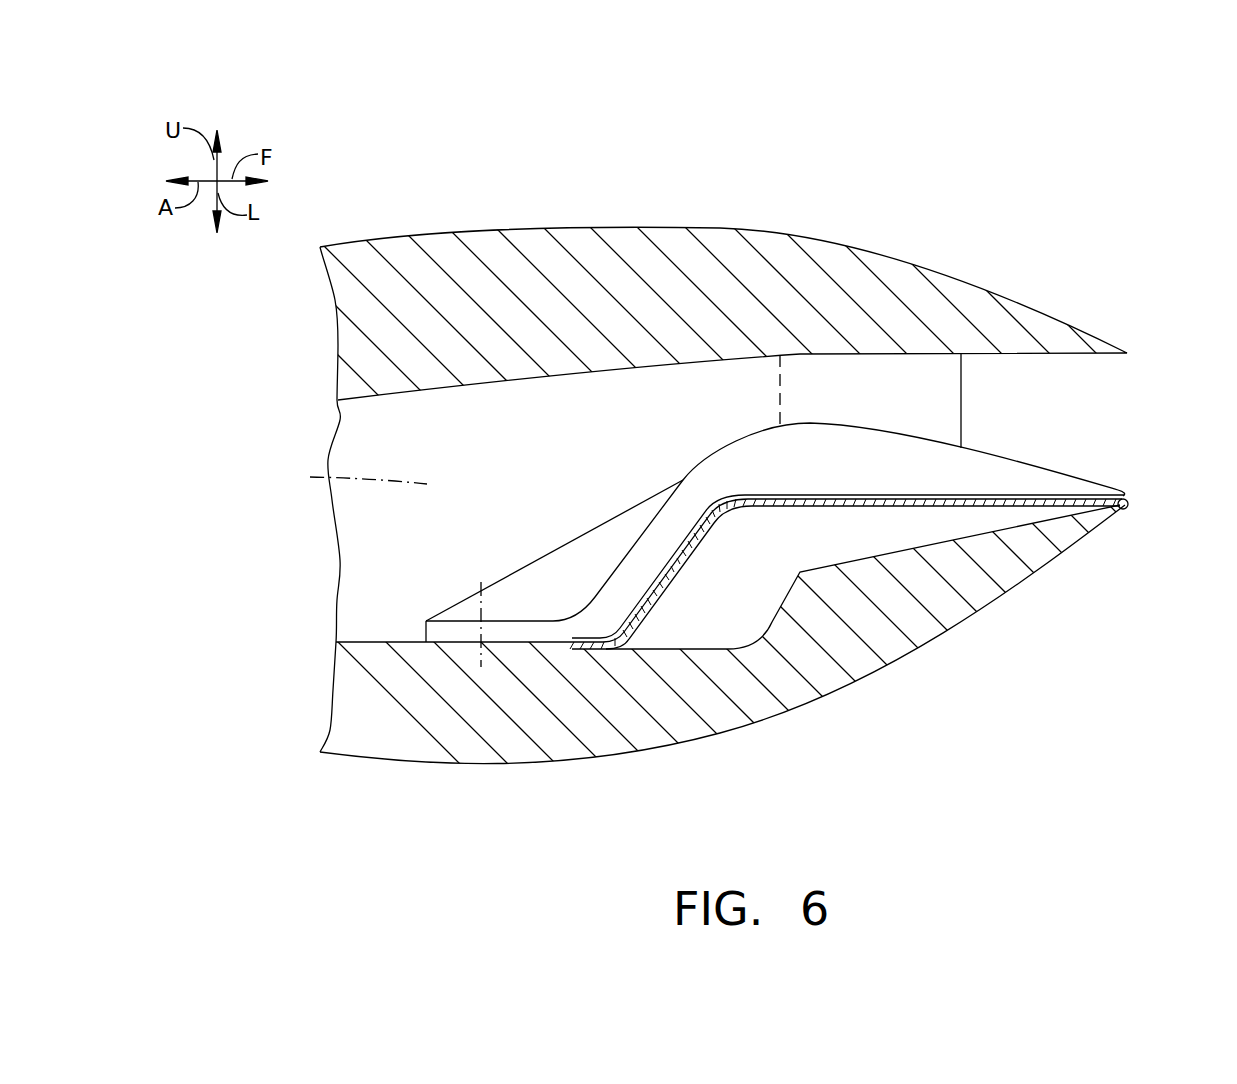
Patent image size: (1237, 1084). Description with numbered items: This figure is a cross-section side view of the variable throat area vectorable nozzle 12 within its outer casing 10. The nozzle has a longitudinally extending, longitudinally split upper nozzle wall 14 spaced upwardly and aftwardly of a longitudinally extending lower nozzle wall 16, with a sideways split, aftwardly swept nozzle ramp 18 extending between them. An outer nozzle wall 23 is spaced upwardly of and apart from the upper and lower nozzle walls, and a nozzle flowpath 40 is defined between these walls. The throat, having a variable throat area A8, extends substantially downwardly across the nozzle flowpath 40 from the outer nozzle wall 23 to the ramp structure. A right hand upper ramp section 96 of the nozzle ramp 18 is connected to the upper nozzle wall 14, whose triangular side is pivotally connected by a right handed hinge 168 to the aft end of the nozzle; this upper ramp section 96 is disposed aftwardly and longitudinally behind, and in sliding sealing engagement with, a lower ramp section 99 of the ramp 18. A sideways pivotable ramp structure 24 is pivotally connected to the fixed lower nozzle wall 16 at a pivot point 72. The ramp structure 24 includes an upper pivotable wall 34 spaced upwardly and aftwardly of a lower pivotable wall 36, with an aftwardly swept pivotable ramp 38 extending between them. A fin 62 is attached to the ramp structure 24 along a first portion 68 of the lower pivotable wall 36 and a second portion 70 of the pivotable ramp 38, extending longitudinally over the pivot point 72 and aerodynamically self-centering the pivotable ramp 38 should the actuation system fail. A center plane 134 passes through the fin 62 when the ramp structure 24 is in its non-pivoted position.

The outer casing 10 is at (517, 228).
The variable throat area vectorable nozzle 12 is at (853, 169).
The nozzle flowpath 40 is at (724, 404).
The variable throat area A8 is at (783, 397).
The outer nozzle wall 23 is at (932, 354).
The upper pivotable wall 34 is at (1023, 455).
The upper nozzle wall 14 is at (1043, 497).
The right handed hinge 168 is at (1129, 504).
The center plane 134 is at (347, 476).
The sideways pivotable ramp structure 24 is at (590, 528).
The aftwardly swept nozzle ramp 18 is at (678, 542).
The aftwardly swept pivotable ramp 38 is at (613, 563).
The fin 62 is at (523, 582).
The second portion 70 is at (605, 576).
The first portion 68 is at (481, 583).
The lower pivotable wall 36 is at (523, 620).
The lower nozzle wall 16 is at (364, 641).
The pivot point 72 is at (480, 642).
The right hand upper ramp section 96 is at (690, 547).
The lower ramp section 99 is at (641, 611).